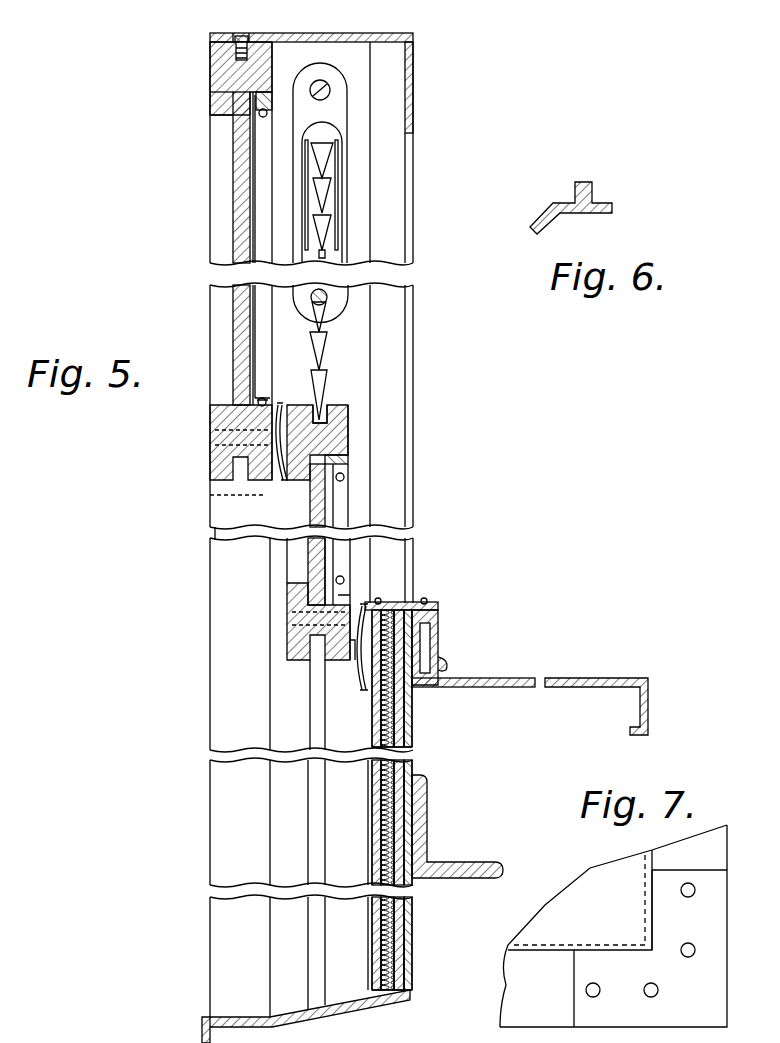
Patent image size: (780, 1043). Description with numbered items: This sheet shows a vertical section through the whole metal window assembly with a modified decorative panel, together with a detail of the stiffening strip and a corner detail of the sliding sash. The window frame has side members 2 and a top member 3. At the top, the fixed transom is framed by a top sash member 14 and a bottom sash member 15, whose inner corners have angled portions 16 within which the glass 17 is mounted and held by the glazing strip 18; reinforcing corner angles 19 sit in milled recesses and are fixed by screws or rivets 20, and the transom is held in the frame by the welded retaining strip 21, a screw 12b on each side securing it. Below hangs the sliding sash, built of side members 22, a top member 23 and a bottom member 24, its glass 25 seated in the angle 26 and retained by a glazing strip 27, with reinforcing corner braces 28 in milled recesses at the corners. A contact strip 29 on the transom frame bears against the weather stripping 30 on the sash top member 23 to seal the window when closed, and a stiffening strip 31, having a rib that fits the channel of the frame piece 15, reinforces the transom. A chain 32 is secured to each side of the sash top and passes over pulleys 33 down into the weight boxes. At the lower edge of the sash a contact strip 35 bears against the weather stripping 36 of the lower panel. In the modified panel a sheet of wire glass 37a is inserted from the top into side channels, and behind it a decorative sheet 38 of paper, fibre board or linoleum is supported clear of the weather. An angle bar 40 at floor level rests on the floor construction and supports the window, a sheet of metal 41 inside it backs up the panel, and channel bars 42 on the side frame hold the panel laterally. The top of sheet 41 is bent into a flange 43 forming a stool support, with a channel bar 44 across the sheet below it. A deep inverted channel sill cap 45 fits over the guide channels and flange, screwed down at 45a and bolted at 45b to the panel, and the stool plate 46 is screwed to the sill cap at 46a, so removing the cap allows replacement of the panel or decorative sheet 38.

In FIG. 5, the side members 2 is at (225, 650).
In FIG. 5, the top member 3 is at (234, 34).
In FIG. 5, the screw 12b is at (286, 46).
In FIG. 5, the top sash member 14 is at (212, 96).
In FIG. 5, the bottom sash member 15 is at (213, 418).
In FIG. 5, the angled portions 16 is at (255, 95).
In FIG. 5, the glass 17 is at (238, 188).
In FIG. 5, the glazing strip 18 is at (265, 107).
In FIG. 5, the reinforcing corner angles 19 is at (205, 108).
In FIG. 5, the screws or rivets 20 is at (210, 78).
In FIG. 5, the retaining strip 21 is at (248, 44).
In FIG. 5, the side members 22 is at (293, 548).
In FIG. 7, the side members 22 is at (712, 848).
In FIG. 5, the top member 23 is at (350, 430).
In FIG. 5, the bottom member 24 is at (290, 643).
In FIG. 7, the bottom member 24 is at (505, 998).
In FIG. 5, the glass 25 is at (310, 560).
In FIG. 7, the glass 25 is at (570, 913).
In FIG. 5, the angle 26 is at (341, 463).
In FIG. 5, the glazing strip 27 is at (341, 478).
In FIG. 5, the reinforcing corner braces 28 is at (350, 420).
In FIG. 7, the reinforcing corner braces 28 is at (713, 915).
In FIG. 5, the contact strip 29 is at (290, 468).
In FIG. 5, the weather stripping 30 is at (273, 405).
In FIG. 5, the stiffening strip 31 is at (213, 480).
In FIG. 6, the stiffening strip 31 is at (592, 191).
In FIG. 5, the chain 32 is at (336, 356).
In FIG. 5, the pulleys 33 is at (334, 183).
In FIG. 5, the contact strip 35 is at (349, 648).
In FIG. 5, the weather stripping 36 is at (358, 655).
In FIG. 5, the sheet of wire glass 37a is at (380, 805).
In FIG. 5, the decorative sheet 38 is at (404, 732).
In FIG. 5, the angle bar 40 is at (497, 862).
In FIG. 5, the sheet of metal 41 is at (414, 712).
In FIG. 5, the channel bars 42 is at (372, 710).
In FIG. 5, the flange 43 is at (436, 612).
In FIG. 5, the channel bar 44 is at (428, 643).
In FIG. 5, the sill cap 45 is at (425, 602).
In FIG. 5, the screw 45a is at (428, 603).
In FIG. 5, the bolt 45b is at (378, 603).
In FIG. 5, the stool plate 46 is at (575, 680).
In FIG. 5, the screw 46a is at (446, 665).